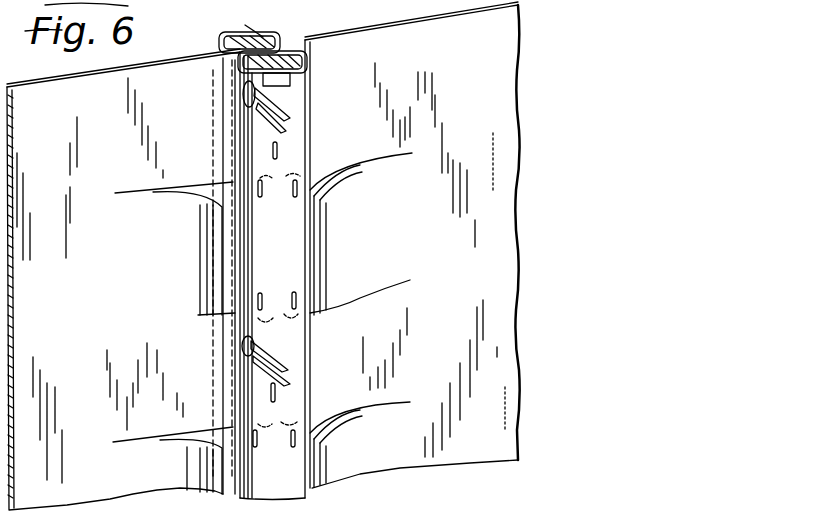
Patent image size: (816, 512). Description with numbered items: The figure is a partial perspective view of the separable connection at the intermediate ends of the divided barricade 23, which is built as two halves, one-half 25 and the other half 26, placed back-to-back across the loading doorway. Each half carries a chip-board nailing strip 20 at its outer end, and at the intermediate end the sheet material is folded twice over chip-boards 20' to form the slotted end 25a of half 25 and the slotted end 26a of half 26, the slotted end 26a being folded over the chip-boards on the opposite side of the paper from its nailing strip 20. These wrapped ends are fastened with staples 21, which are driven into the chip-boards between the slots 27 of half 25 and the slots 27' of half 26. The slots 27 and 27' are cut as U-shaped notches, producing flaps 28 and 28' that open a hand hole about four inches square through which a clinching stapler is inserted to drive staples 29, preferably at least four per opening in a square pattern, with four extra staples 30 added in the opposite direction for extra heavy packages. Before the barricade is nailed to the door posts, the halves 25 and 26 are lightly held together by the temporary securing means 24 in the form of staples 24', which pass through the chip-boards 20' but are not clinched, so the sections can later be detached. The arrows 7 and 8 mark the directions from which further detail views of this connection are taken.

The section line direction arrow 7 is at (247, 112).
The section line direction arrow 8 is at (257, 143).
The chip-board nailing strip 20 is at (292, 46).
The chip-boards 20' is at (277, 33).
The staples 21 is at (278, 152).
The divided barricade 23 is at (348, 483).
The temporary securing means 24 is at (228, 221).
The staples 24' is at (228, 237).
The one-half of divided barricade 25 is at (448, 263).
The slotted end 25a is at (220, 41).
The other half of divided barricade 26 is at (116, 296).
The slotted end 26a is at (303, 368).
The slots 27 is at (371, 310).
The slots 27' is at (166, 331).
The flaps 28 is at (369, 330).
The flaps 28' is at (156, 363).
The staples 29 is at (276, 88).
The extra staples 30 is at (262, 323).